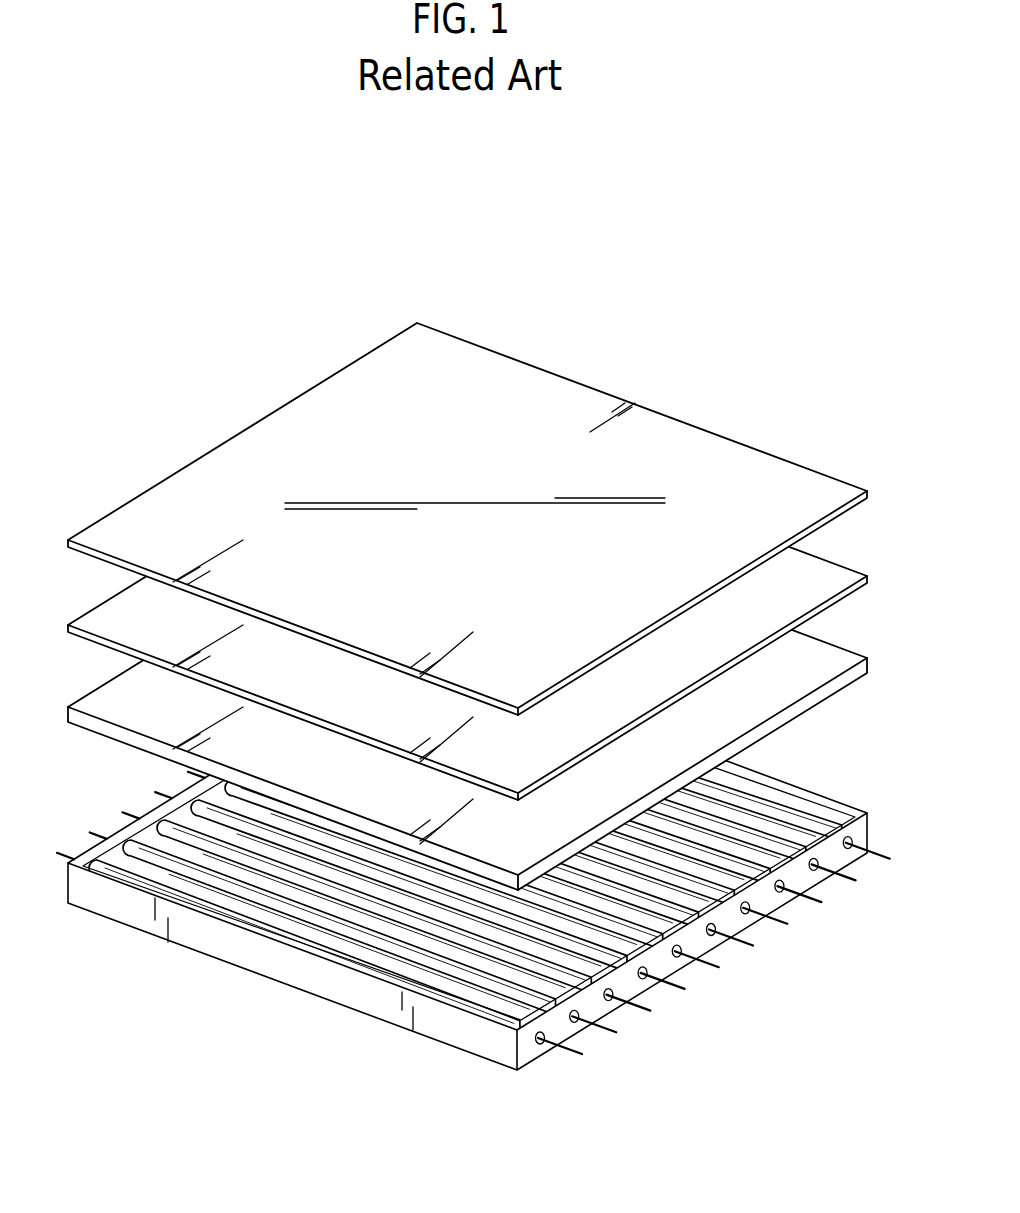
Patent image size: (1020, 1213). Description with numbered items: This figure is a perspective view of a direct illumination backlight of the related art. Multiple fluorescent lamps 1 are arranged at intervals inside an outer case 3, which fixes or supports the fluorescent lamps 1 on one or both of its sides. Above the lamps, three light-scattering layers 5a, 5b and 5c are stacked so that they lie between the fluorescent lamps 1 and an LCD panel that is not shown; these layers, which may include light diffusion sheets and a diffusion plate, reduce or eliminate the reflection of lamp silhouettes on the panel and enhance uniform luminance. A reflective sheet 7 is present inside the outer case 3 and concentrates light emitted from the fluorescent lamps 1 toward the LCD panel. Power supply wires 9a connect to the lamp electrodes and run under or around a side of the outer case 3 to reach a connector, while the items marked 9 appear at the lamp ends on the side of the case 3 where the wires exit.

The fluorescent lamp 1 is at (308, 914).
The outer case 3 is at (467, 870).
The light-scattering layer 5a is at (813, 657).
The light-scattering layer 5b is at (813, 569).
The light-scattering layer 5c is at (813, 483).
The reflective sheet 7 is at (408, 938).
The lamp terminal 9 is at (579, 1047).
The power supply wire 9a is at (58, 857).